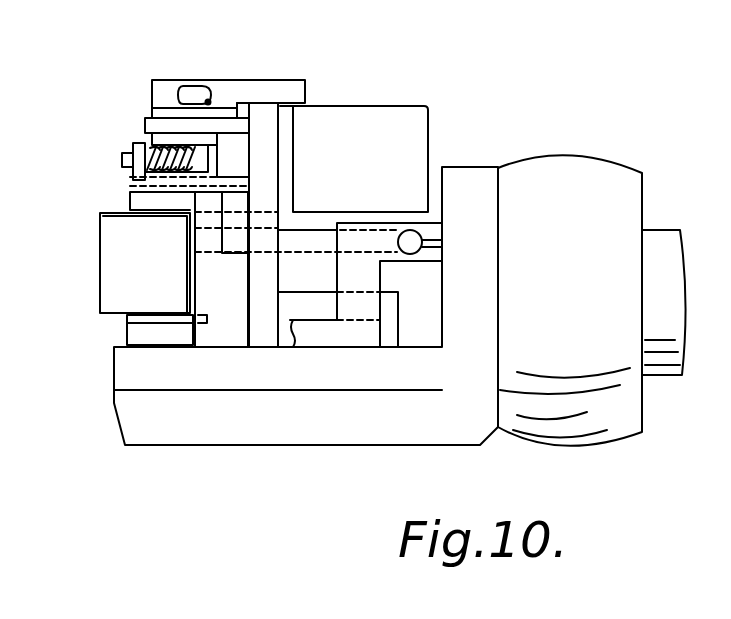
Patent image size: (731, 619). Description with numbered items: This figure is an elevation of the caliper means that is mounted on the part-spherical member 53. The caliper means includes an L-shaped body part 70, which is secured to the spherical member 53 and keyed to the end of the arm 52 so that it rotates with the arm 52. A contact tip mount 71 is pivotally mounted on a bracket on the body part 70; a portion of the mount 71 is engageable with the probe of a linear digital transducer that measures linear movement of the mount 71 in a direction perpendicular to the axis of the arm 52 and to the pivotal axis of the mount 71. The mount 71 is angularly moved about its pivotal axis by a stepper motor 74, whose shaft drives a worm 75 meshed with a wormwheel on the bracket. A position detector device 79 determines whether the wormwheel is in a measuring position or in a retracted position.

The L-shaped body part 70 is at (205, 425).
The contact tip mount 71 is at (122, 295).
The stepper motor 74 is at (385, 118).
The worm 75 is at (145, 167).
The position detector device 79 is at (172, 76).
The part-spherical member 53 is at (587, 168).
The arm 52 is at (657, 238).